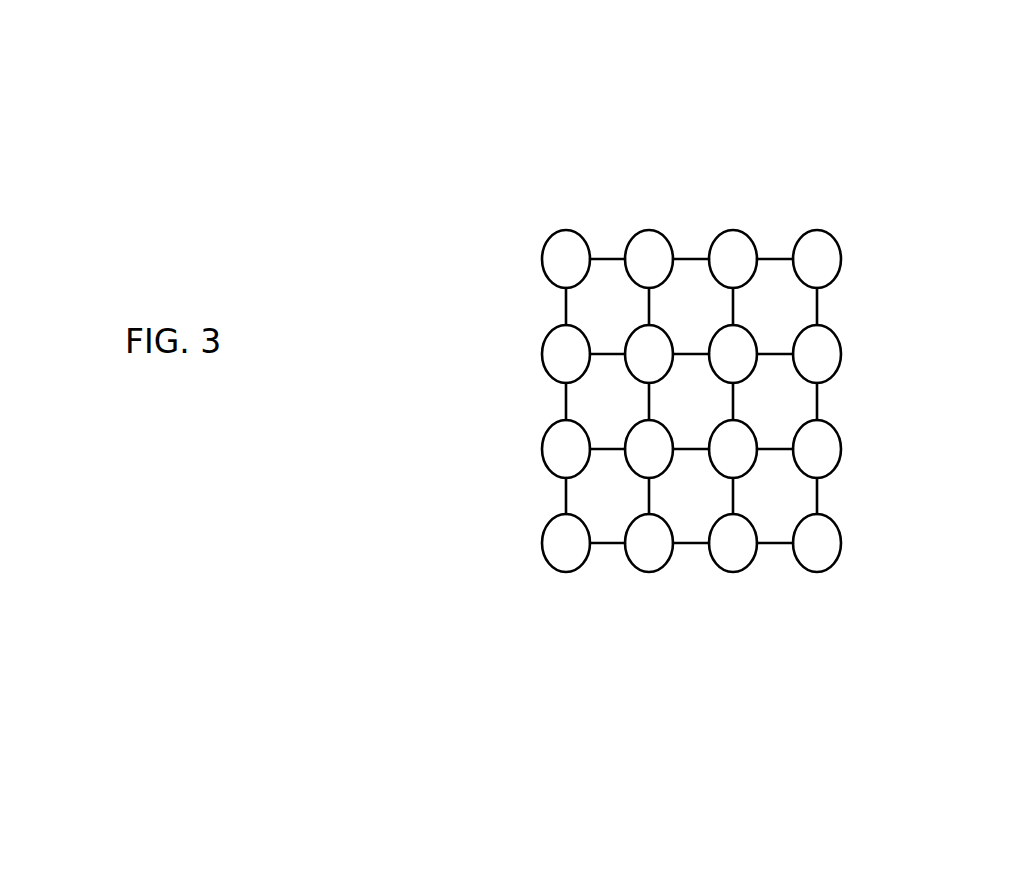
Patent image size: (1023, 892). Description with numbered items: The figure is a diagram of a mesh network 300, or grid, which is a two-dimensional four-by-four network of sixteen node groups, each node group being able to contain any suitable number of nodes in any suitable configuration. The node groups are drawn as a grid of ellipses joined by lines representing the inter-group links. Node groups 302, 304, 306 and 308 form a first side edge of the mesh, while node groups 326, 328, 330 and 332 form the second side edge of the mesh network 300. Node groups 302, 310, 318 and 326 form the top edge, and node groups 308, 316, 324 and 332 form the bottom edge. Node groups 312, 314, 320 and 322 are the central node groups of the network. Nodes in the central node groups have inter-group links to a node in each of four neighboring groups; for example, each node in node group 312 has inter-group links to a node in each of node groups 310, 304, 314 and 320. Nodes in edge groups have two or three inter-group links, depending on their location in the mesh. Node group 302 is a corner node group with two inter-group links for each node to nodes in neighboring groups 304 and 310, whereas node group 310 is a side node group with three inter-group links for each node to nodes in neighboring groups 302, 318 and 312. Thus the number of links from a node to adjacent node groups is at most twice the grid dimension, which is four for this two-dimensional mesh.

The mesh network 300 is at (420, 144).
The node group 302 is at (542, 259).
The node group 304 is at (542, 354).
The node group 306 is at (542, 449).
The node group 308 is at (542, 543).
The node group 310 is at (643, 230).
The node group 312 is at (628, 337).
The node group 314 is at (633, 468).
The node group 316 is at (650, 573).
The node group 318 is at (735, 230).
The node group 320 is at (755, 338).
The node group 322 is at (755, 437).
The node group 324 is at (735, 573).
The node group 326 is at (826, 232).
The node group 328 is at (842, 353).
The node group 330 is at (842, 447).
The node group 332 is at (823, 573).